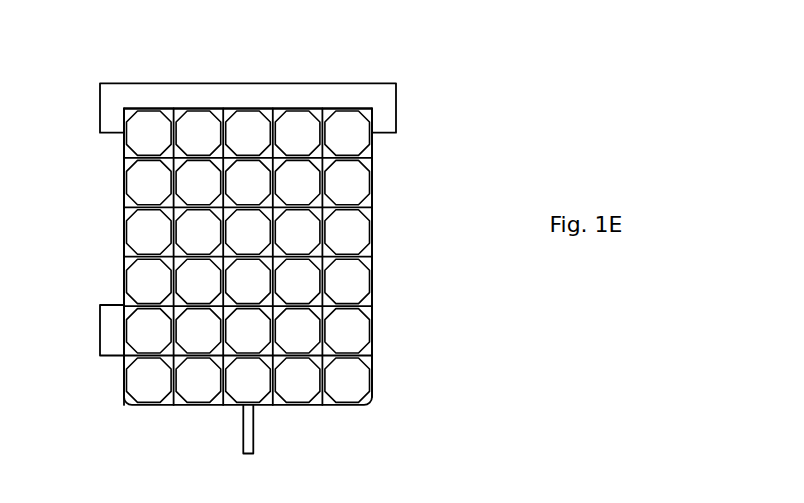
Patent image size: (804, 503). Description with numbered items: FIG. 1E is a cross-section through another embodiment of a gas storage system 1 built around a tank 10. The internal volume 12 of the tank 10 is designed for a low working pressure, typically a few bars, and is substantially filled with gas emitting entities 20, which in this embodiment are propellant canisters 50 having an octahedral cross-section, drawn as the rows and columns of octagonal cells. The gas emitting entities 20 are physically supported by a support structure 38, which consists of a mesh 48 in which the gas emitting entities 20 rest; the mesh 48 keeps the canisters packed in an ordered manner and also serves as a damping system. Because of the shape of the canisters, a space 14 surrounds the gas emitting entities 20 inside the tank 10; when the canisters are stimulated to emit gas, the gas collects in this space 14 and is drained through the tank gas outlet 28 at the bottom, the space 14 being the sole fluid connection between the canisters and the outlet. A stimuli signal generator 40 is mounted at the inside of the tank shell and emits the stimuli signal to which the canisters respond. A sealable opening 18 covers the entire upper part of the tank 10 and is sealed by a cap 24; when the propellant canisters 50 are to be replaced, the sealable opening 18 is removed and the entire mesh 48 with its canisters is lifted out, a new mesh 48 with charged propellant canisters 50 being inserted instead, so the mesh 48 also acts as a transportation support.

The gas storage system 1 is at (484, 79).
The tank 10 is at (123, 203).
The internal volume 12 is at (363, 150).
The space 14 is at (127, 265).
The sealable opening 18 is at (227, 110).
The gas emitting entities 20 is at (357, 390).
The cap 24 is at (113, 93).
The tank gas outlet 28 is at (248, 427).
The support structure 38 is at (215, 357).
The stimuli signal generator 40 is at (105, 335).
The mesh 48 is at (170, 164).
The propellant canisters 50 is at (356, 282).